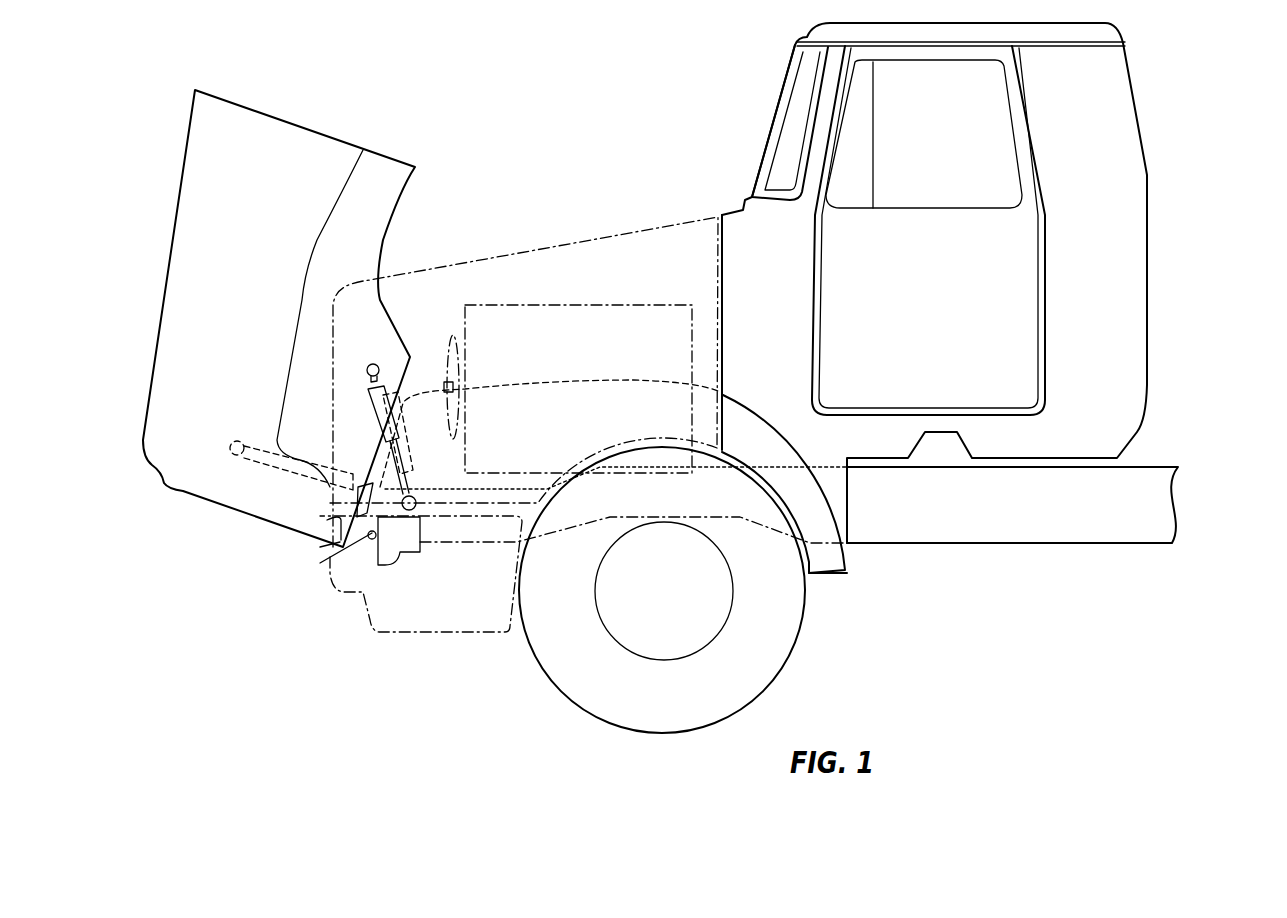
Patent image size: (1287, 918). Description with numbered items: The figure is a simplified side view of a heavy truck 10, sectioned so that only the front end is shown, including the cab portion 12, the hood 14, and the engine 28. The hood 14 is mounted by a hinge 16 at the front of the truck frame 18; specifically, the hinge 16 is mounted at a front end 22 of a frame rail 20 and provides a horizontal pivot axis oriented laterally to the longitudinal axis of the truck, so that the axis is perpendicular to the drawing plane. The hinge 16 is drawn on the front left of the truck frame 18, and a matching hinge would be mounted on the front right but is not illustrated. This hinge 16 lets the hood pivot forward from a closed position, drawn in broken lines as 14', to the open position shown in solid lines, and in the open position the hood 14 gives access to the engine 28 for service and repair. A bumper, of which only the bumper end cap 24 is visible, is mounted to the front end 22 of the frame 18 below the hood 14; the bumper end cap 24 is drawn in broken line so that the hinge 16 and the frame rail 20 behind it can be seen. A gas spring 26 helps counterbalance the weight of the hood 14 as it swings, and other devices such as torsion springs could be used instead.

The heavy truck 10 is at (1164, 198).
The cab portion 12 is at (1118, 283).
The hood 14 is at (279, 297).
The hood in closed position 14' is at (524, 317).
The hinge 16 is at (347, 547).
The truck frame 18 is at (1191, 494).
The frame rail 20 is at (1147, 533).
The front end of frame rail 22 is at (398, 552).
The bumper end cap 24 is at (423, 633).
The gas spring 26 is at (258, 463).
The engine 28 is at (508, 323).